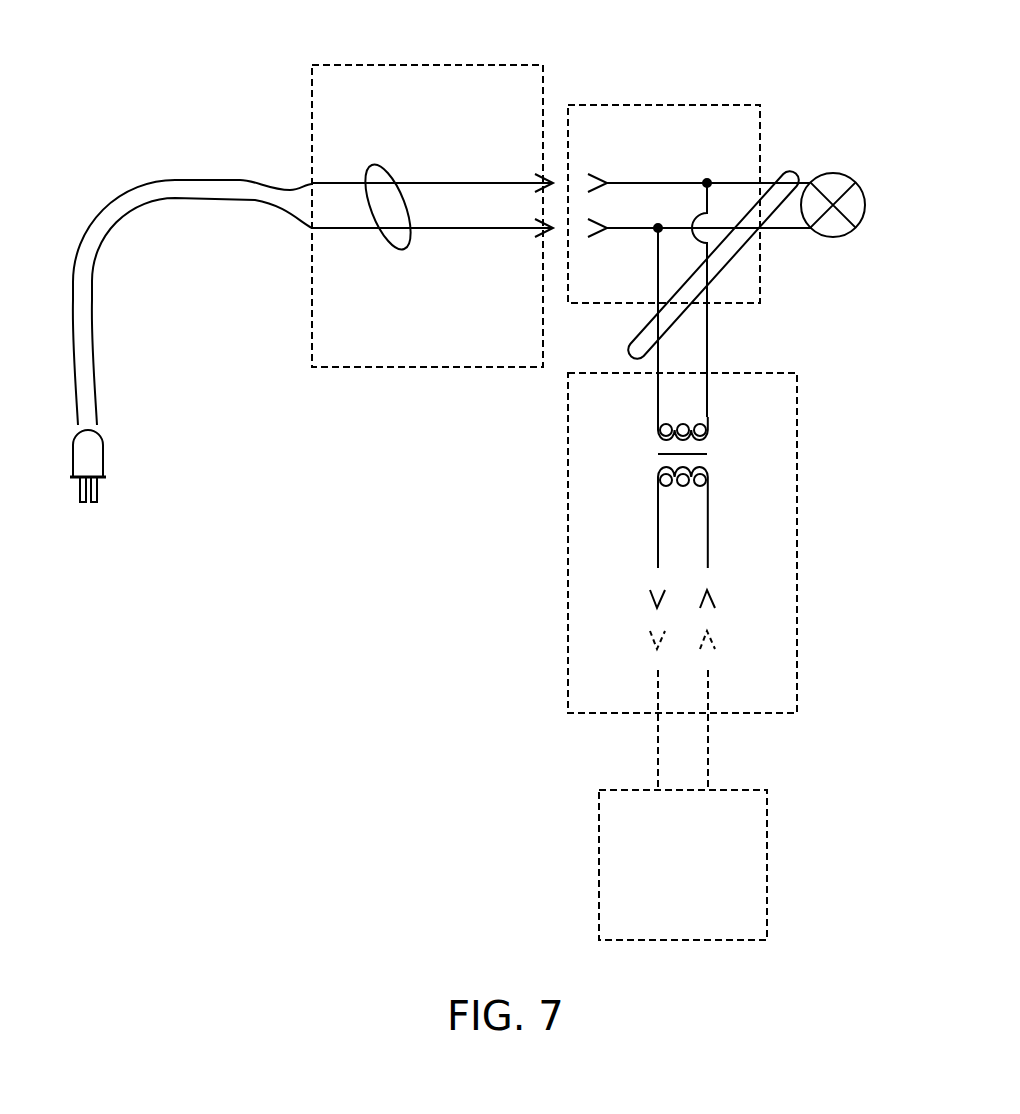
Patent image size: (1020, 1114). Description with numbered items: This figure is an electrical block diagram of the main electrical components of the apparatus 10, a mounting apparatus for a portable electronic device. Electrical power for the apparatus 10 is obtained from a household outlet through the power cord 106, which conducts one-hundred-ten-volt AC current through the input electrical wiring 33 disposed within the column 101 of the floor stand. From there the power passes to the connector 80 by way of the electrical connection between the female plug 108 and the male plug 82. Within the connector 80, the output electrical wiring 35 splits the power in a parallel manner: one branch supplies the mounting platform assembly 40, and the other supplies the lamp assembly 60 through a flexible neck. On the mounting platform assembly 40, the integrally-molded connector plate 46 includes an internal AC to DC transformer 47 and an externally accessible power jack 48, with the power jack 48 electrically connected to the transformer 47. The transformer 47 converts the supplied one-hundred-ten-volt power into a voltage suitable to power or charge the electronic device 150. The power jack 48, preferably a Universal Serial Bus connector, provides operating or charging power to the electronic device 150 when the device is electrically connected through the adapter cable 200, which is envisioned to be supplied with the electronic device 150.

The apparatus 10 is at (425, 680).
The input electrical wiring 33 is at (373, 167).
The output electrical wiring 35 is at (790, 167).
The mounting platform assembly 40 is at (810, 652).
The connector plate 46 is at (767, 488).
The transformer 47 is at (698, 452).
The power jack 48 is at (733, 598).
The lamp assembly 60 is at (866, 205).
The connector 80 is at (695, 104).
The male plug 82 is at (590, 177).
The column 101 is at (372, 64).
The power cord 106 is at (166, 203).
The female plug 108 is at (548, 178).
The electronic device 150 is at (767, 848).
The adapter cable 200 is at (708, 730).